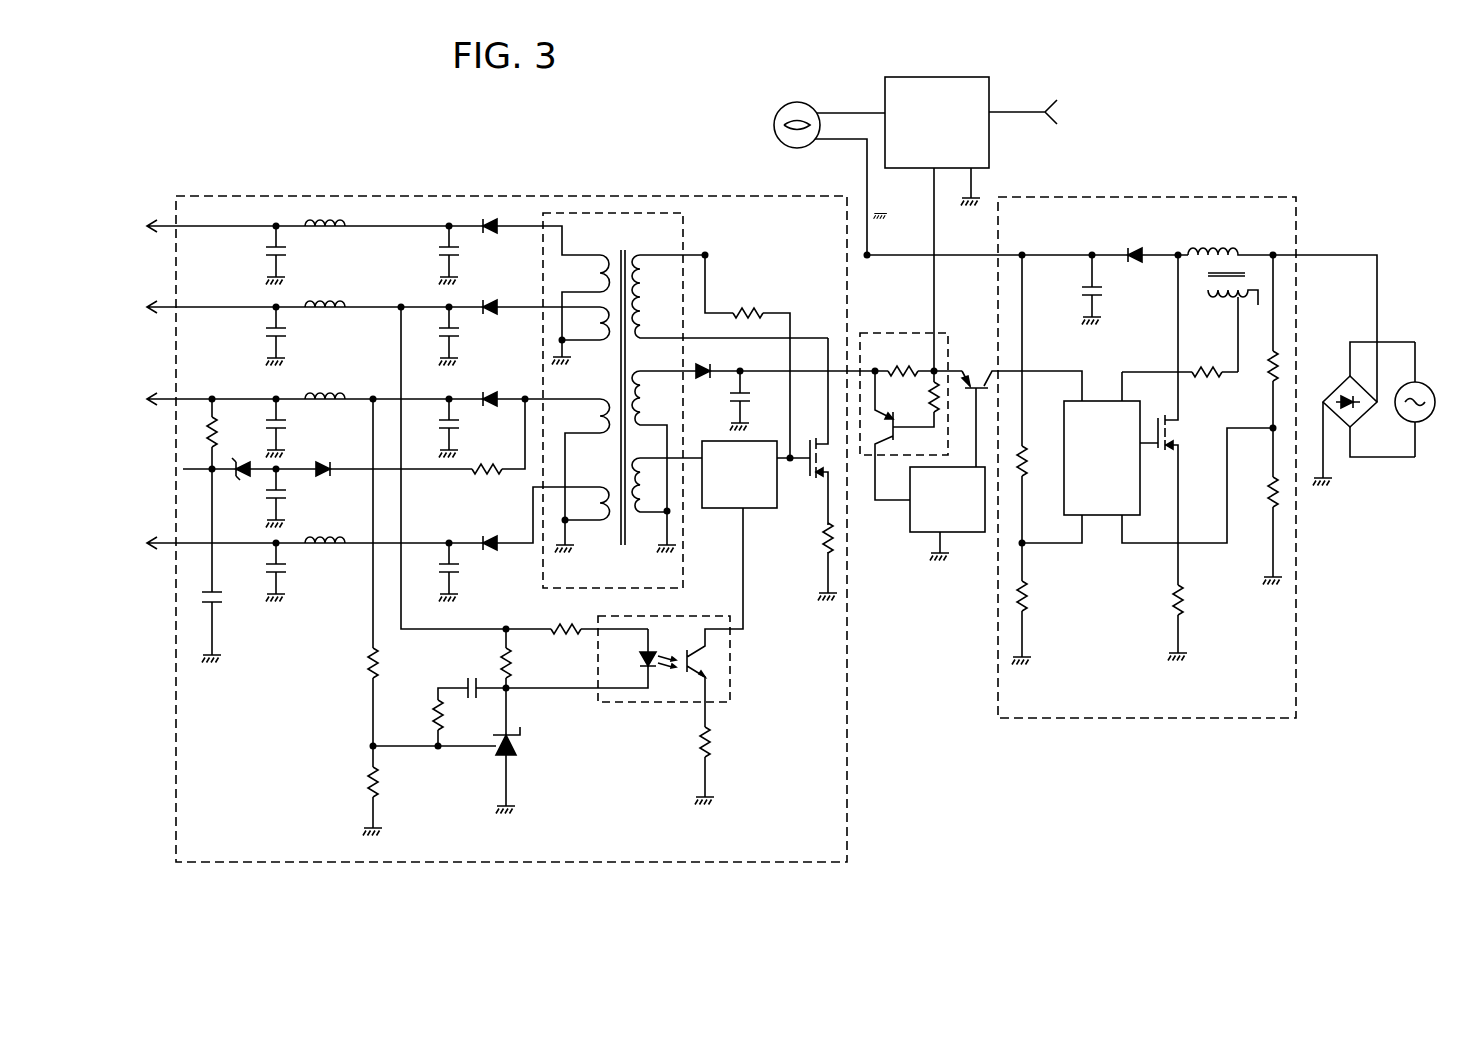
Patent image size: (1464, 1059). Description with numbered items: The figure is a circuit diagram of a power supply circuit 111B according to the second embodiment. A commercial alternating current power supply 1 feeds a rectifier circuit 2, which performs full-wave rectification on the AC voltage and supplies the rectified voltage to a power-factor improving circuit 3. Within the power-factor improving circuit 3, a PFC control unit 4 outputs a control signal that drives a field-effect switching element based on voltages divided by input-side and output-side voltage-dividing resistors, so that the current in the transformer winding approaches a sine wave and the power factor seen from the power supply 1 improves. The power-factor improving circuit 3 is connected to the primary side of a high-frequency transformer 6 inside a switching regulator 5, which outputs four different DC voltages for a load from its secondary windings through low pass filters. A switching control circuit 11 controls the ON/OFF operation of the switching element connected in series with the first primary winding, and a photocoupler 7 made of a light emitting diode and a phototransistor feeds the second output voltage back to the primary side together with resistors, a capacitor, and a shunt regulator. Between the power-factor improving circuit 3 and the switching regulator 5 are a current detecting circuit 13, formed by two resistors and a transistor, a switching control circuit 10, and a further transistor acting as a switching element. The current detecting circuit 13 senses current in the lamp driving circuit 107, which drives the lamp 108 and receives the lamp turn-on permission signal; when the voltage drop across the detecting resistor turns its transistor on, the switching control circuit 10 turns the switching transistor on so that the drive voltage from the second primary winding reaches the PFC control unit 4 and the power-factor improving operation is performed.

The commercial alternating current power supply 1 is at (1428, 386).
The rectifier circuit 2 is at (1338, 386).
The power-factor improving circuit 3 is at (1160, 197).
The PFC control unit 4 is at (1064, 431).
The switching regulator 5 is at (401, 196).
The high-frequency transformer 6 is at (632, 213).
The photocoupler 7 is at (660, 702).
The switching control circuit 10 is at (910, 532).
The switching control circuit 11 is at (726, 508).
The current detecting circuit 13 is at (875, 333).
The lamp driving circuit 107 is at (935, 77).
The lamp 108 is at (778, 110).
The power supply circuit 111B is at (338, 134).